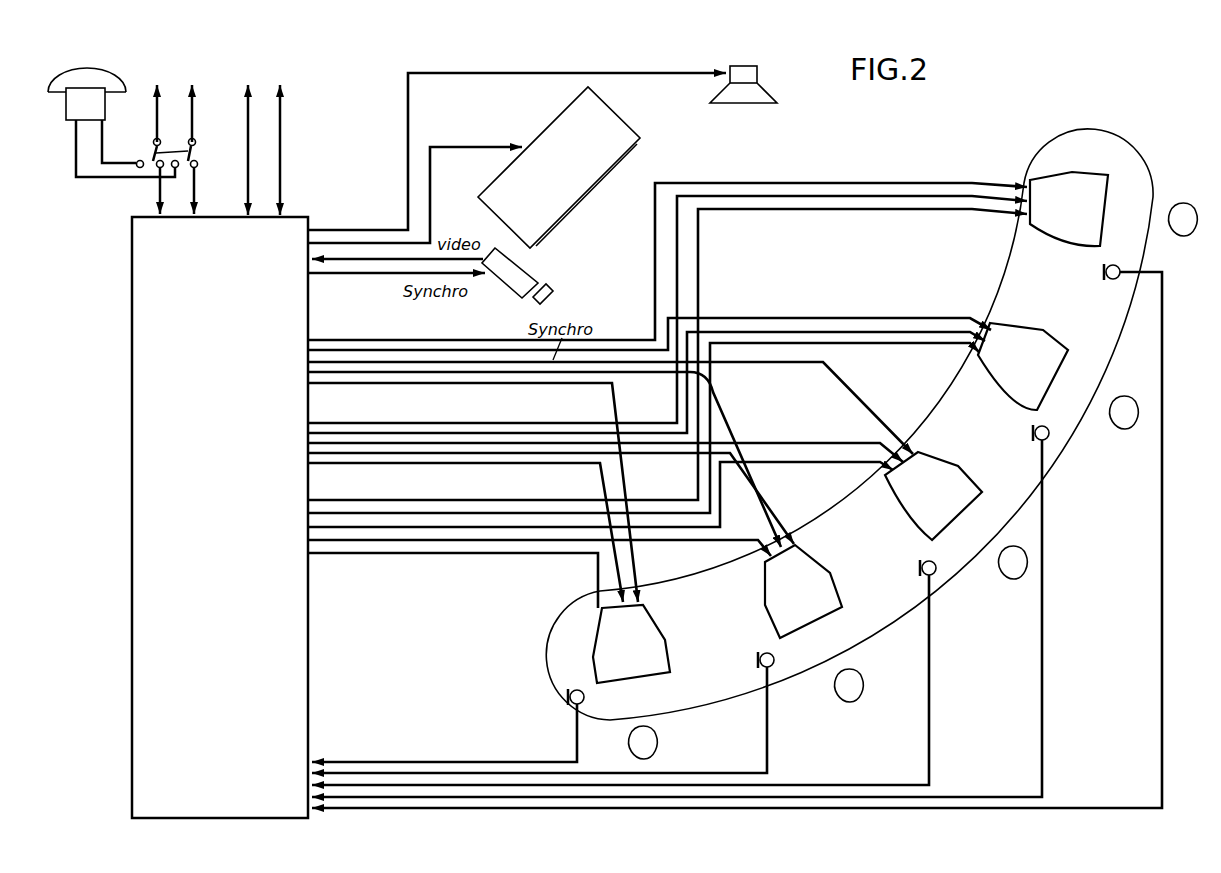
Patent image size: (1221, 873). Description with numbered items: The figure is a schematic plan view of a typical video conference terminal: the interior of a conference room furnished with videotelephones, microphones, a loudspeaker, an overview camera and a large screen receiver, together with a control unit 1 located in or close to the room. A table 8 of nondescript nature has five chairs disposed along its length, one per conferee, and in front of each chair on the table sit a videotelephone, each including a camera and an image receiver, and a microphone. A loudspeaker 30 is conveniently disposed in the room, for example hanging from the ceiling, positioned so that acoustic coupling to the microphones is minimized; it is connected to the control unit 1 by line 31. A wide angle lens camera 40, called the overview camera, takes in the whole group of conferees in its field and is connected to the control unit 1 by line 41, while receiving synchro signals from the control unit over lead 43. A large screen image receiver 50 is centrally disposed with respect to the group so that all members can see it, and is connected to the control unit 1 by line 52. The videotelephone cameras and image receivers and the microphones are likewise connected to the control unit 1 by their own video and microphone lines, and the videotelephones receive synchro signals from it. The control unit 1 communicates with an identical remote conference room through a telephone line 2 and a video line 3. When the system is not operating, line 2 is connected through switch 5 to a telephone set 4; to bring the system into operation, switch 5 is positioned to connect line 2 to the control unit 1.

The control unit 1 is at (131, 486).
The telephone line 2 is at (193, 82).
The video line 3 is at (285, 79).
The telephone set 4 is at (92, 81).
The switch 5 is at (153, 153).
The table 8 is at (1050, 146).
The loudspeaker 30 is at (757, 74).
The loudspeaker line 31 is at (536, 69).
The wide angle lens camera 40 is at (521, 267).
The overview camera line 41 is at (331, 262).
The synchro lead 43 is at (387, 274).
The large screen image receiver 50 is at (612, 118).
The large screen receiver line 52 is at (479, 147).